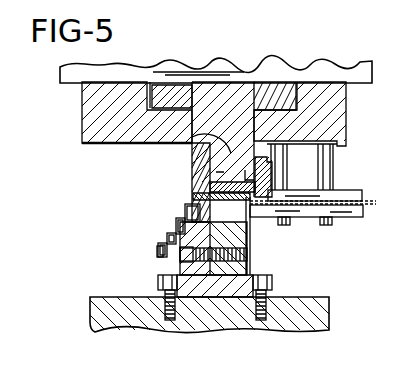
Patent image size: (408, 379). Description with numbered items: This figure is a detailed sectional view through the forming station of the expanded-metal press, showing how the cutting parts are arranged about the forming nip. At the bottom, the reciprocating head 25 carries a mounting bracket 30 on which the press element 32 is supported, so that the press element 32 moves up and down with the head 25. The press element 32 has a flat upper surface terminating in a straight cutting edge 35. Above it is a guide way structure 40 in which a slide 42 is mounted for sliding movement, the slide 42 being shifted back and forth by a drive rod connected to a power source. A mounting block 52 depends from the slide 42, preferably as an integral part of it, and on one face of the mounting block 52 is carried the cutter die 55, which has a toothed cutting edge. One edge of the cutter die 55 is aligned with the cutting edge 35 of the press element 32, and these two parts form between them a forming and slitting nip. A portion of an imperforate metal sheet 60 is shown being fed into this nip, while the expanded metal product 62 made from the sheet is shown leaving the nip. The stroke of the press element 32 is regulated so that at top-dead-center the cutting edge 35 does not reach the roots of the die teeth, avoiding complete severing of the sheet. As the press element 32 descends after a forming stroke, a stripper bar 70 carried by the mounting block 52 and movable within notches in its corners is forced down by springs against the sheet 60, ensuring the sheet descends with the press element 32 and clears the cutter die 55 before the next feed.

The head 25 is at (215, 313).
The mounting bracket 30 is at (158, 288).
The press element 32 is at (237, 243).
The cutting edge 35 is at (246, 227).
The guide way structure 40 is at (329, 112).
The slide 42 is at (257, 90).
The mounting block 52 is at (202, 135).
The cutter die 55 is at (197, 160).
The imperforate metal sheet 60 is at (341, 207).
The expanded metal product 62 is at (170, 223).
The stripper bar 70 is at (248, 184).